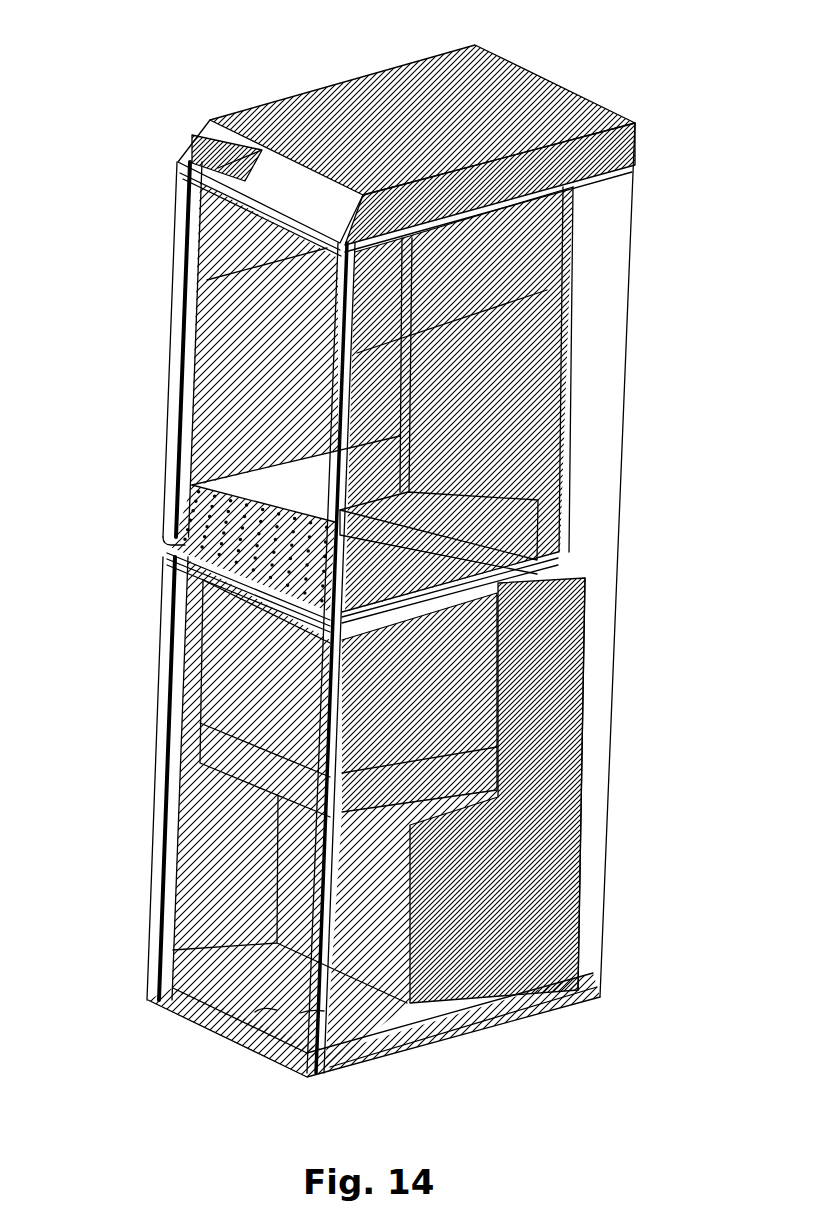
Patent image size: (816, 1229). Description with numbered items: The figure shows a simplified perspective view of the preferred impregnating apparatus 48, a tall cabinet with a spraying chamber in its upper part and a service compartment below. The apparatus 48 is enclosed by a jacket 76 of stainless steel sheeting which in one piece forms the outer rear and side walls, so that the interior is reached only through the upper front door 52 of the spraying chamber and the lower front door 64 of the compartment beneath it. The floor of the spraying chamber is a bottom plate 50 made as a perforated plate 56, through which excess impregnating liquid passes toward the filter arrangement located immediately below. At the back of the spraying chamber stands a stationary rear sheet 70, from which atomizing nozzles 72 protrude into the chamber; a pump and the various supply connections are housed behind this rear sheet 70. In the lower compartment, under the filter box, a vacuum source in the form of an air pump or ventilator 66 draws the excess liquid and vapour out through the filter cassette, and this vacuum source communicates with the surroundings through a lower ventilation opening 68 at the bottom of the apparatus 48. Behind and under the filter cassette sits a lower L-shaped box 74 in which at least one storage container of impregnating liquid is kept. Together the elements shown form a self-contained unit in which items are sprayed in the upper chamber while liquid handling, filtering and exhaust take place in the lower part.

The apparatus 48 is at (553, 70).
The upper front door 52 is at (237, 385).
The bottom plate 50 is at (180, 567).
The perforated plate 56 is at (449, 557).
The lower front door 64 is at (197, 887).
The ventilator 66 is at (412, 698).
The lower ventilation opening 68 is at (277, 1010).
The stationary rear sheet 70 is at (563, 358).
The atomizing nozzles 72 is at (460, 323).
The lower L-shaped box 74 is at (530, 890).
The jacket 76 is at (622, 490).